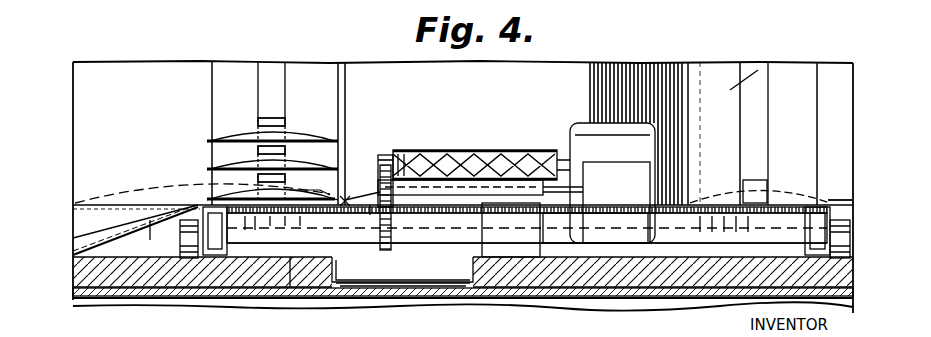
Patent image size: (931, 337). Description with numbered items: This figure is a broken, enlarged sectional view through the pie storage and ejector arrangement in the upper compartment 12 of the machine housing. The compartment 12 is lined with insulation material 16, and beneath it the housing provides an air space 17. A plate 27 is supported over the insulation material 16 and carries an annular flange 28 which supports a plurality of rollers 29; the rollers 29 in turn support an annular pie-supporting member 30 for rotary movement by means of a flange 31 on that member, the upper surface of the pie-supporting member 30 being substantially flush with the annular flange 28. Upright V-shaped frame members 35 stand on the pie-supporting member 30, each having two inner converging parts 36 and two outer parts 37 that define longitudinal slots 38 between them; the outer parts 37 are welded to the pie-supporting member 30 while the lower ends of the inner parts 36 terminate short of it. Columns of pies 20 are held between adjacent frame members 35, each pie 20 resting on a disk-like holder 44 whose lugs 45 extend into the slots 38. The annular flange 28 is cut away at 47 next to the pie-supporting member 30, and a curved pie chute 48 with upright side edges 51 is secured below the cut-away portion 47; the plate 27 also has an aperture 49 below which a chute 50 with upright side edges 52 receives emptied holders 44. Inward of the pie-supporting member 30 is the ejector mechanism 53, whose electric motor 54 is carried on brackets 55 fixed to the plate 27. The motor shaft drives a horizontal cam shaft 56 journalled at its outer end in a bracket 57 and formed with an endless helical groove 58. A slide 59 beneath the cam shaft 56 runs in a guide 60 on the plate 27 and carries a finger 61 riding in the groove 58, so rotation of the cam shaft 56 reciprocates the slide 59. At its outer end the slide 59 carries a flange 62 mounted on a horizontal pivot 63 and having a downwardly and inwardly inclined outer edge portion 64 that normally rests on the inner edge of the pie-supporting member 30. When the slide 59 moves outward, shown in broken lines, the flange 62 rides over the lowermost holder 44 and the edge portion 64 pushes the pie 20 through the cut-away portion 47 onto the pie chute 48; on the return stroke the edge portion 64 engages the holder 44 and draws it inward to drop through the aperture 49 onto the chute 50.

The upper compartment 12 is at (147, 80).
The insulation material 16 is at (147, 270).
The air space 17 is at (180, 299).
The pie 20 is at (306, 136).
The plate 27 is at (292, 287).
The annular flange 28 is at (87, 205).
The rollers 29 is at (195, 241).
The annular pie-supporting member 30 is at (780, 203).
The flange 31 is at (818, 200).
The frame members 35 is at (714, 79).
The inner converging parts 36 is at (730, 90).
The outer parts 37 is at (792, 80).
The longitudinal slot 38 is at (752, 112).
The disk-like holder 44 is at (710, 182).
The lugs 45 is at (756, 182).
The cut-away portion 47 is at (125, 218).
The pie chute 48 is at (151, 218).
The aperture 49 is at (445, 258).
The chute 50 is at (402, 287).
The upright side edges 51 is at (105, 222).
The upright side edges 52 is at (337, 272).
The ejector mechanism 53 is at (540, 150).
The electric motor 54 is at (621, 140).
The brackets 55 is at (640, 229).
The cam shaft 56 is at (482, 150).
The bracket 57 is at (378, 164).
The endless helical groove 58 is at (416, 150).
The slide 59 is at (425, 200).
The guide 60 is at (506, 200).
The finger 61 is at (575, 192).
The flange 62 is at (380, 196).
The horizontal pivot 63 is at (374, 208).
The outer edge portion 64 is at (349, 210).